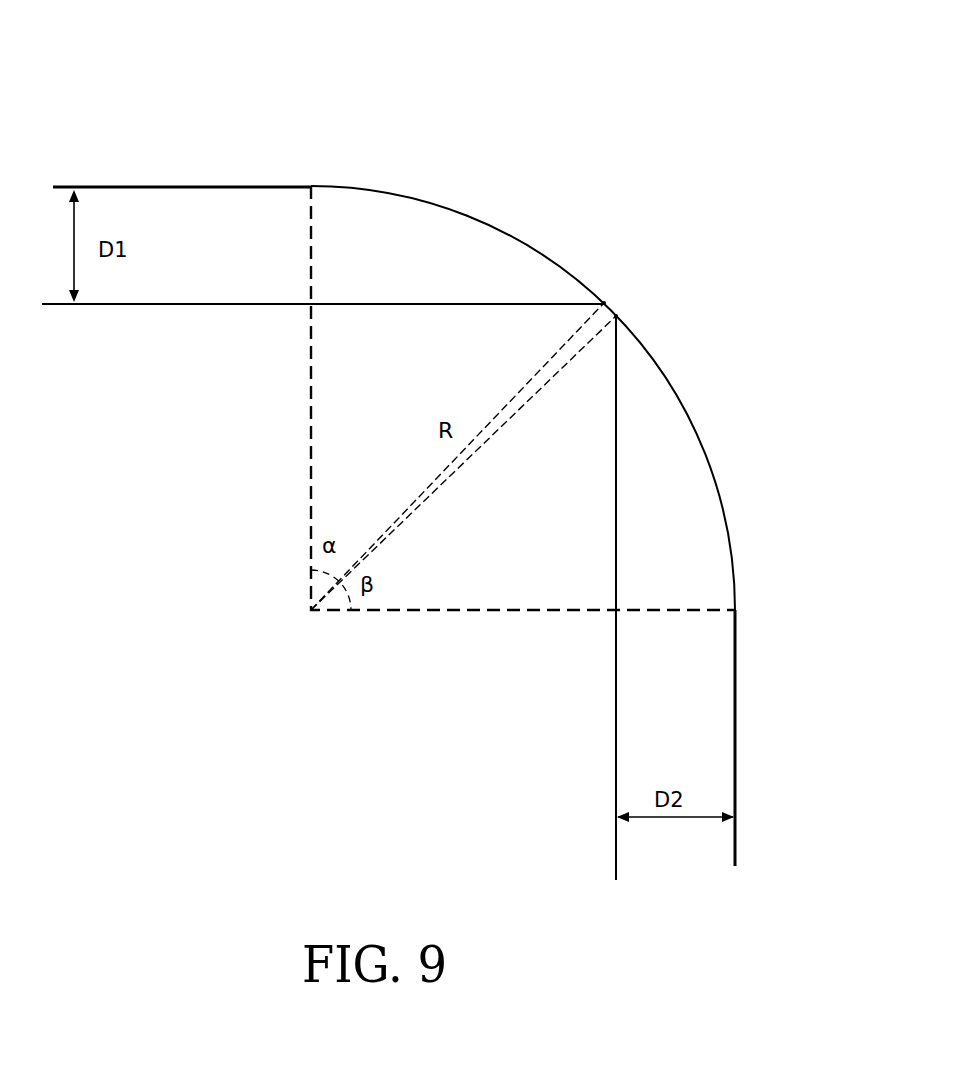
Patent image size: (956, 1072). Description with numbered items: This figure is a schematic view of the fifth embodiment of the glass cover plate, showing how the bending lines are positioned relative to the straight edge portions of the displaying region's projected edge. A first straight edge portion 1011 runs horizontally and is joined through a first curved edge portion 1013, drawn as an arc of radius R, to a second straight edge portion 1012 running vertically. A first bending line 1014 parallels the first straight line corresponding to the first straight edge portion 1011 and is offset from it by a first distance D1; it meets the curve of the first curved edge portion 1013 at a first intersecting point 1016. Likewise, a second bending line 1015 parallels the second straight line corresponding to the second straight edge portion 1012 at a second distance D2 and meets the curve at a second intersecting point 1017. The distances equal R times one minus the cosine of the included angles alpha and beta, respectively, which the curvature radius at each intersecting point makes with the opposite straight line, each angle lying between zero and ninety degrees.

The first straight edge portion 1011 is at (225, 186).
The second straight edge portion 1012 is at (732, 725).
The first curved edge portion 1013 is at (435, 200).
The first bending line 1014 is at (138, 302).
The second bending line 1015 is at (615, 758).
The first intersecting point 1016 is at (602, 299).
The second intersecting point 1017 is at (622, 315).